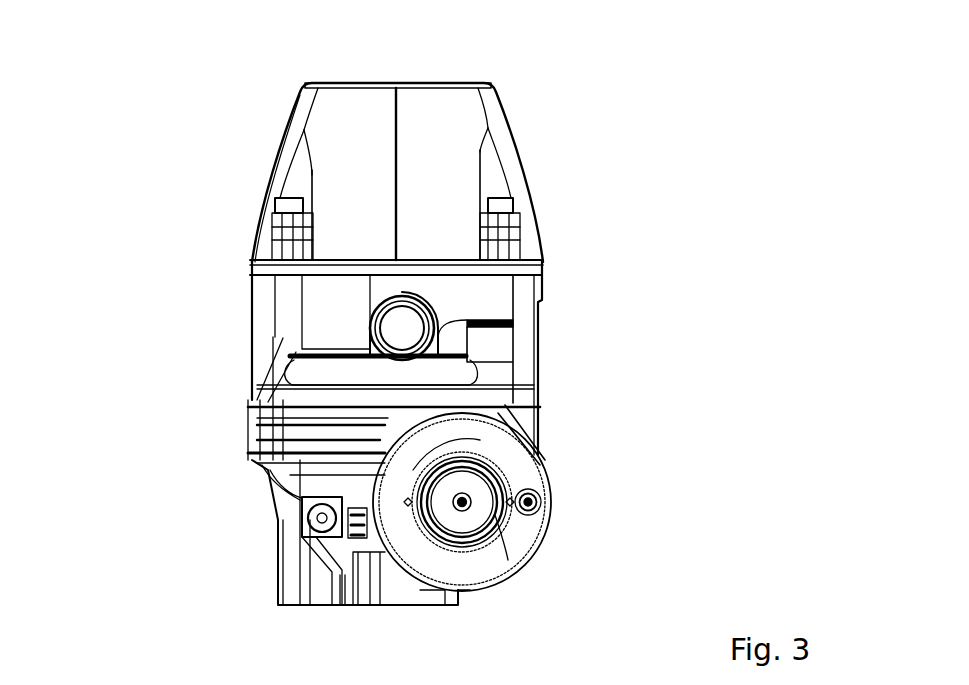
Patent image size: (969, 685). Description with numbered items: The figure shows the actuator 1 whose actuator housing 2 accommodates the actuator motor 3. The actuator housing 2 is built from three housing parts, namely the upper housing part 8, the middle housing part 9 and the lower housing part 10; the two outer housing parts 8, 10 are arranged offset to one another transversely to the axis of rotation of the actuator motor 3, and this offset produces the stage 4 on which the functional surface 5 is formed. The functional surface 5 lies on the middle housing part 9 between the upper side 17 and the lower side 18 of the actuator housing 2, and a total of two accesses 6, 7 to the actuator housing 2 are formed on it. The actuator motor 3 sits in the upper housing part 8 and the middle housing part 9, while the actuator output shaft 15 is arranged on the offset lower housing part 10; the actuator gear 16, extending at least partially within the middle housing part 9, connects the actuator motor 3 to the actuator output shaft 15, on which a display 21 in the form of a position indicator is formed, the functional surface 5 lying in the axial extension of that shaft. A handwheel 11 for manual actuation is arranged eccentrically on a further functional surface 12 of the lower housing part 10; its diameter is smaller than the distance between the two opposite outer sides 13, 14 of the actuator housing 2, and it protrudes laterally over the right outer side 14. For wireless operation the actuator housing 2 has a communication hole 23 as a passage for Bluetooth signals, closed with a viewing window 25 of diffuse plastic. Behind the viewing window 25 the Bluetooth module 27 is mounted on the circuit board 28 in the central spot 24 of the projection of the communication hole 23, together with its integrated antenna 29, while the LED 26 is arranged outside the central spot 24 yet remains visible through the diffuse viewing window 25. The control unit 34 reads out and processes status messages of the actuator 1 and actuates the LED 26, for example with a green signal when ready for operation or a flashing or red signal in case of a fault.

The actuator 1 is at (232, 98).
The actuator housing 2 is at (494, 77).
The actuator motor 3 is at (458, 152).
The stage 4 is at (490, 360).
The functional surface 5 is at (467, 375).
The access 6 is at (272, 262).
The access 7 is at (533, 300).
The upper housing part 8 is at (430, 118).
The middle housing part 9 is at (260, 290).
The lower housing part 10 is at (283, 553).
The handwheel 11 is at (548, 465).
The further functional surface 12 is at (290, 493).
The outer side 13 is at (228, 216).
The right outer side 14 is at (628, 216).
The actuator output shaft 15 is at (428, 612).
The actuator gear 16 is at (228, 406).
The upper side 17 is at (338, 78).
The lower side 18 is at (362, 609).
The display 21 is at (300, 320).
The communication hole 23 is at (317, 342).
The central spot 24 is at (418, 333).
The viewing window 25 is at (402, 341).
The LED 26 is at (392, 320).
The Bluetooth module 27 is at (405, 358).
The circuit board 28 is at (410, 323).
The integrated antenna 29 is at (453, 333).
The control unit 34 is at (402, 225).